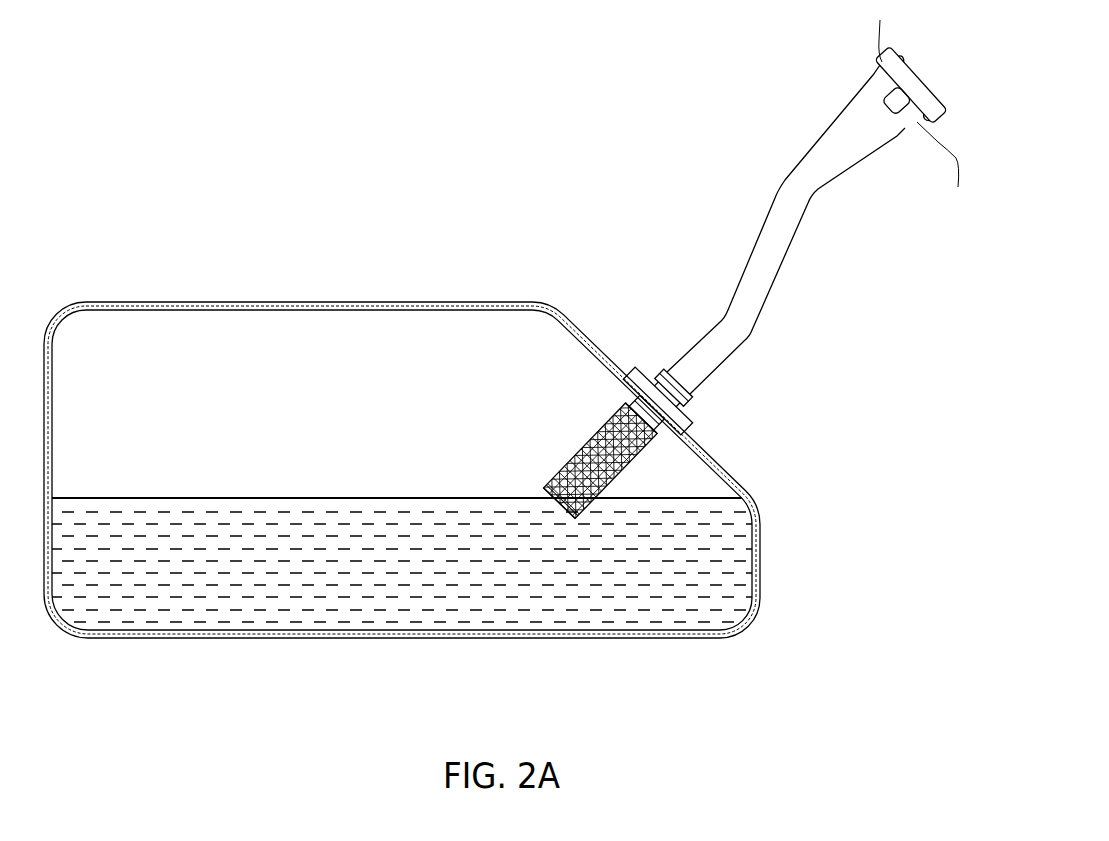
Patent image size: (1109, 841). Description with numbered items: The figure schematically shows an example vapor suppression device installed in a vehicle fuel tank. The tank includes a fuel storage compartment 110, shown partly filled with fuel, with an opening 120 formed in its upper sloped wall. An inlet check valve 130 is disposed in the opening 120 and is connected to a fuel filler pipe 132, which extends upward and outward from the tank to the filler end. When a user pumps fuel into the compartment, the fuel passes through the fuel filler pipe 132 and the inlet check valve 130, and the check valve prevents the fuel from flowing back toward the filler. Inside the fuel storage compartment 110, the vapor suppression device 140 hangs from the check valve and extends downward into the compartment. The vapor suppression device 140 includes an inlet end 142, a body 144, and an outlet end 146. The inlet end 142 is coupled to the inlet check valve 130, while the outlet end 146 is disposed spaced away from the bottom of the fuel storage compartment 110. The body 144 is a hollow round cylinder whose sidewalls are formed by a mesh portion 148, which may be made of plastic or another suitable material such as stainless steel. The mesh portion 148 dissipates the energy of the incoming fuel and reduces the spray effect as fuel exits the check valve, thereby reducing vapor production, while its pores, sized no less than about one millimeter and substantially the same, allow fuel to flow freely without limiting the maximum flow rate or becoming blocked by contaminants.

The fuel storage compartment 110 is at (313, 302).
The opening 120 is at (641, 378).
The inlet check valve 130 is at (686, 421).
The fuel filler pipe 132 is at (837, 160).
The vapor suppression device 140 is at (588, 459).
The inlet end 142 is at (625, 407).
The body 144 is at (628, 453).
The outlet end 146 is at (553, 507).
The mesh portion 148 is at (578, 466).